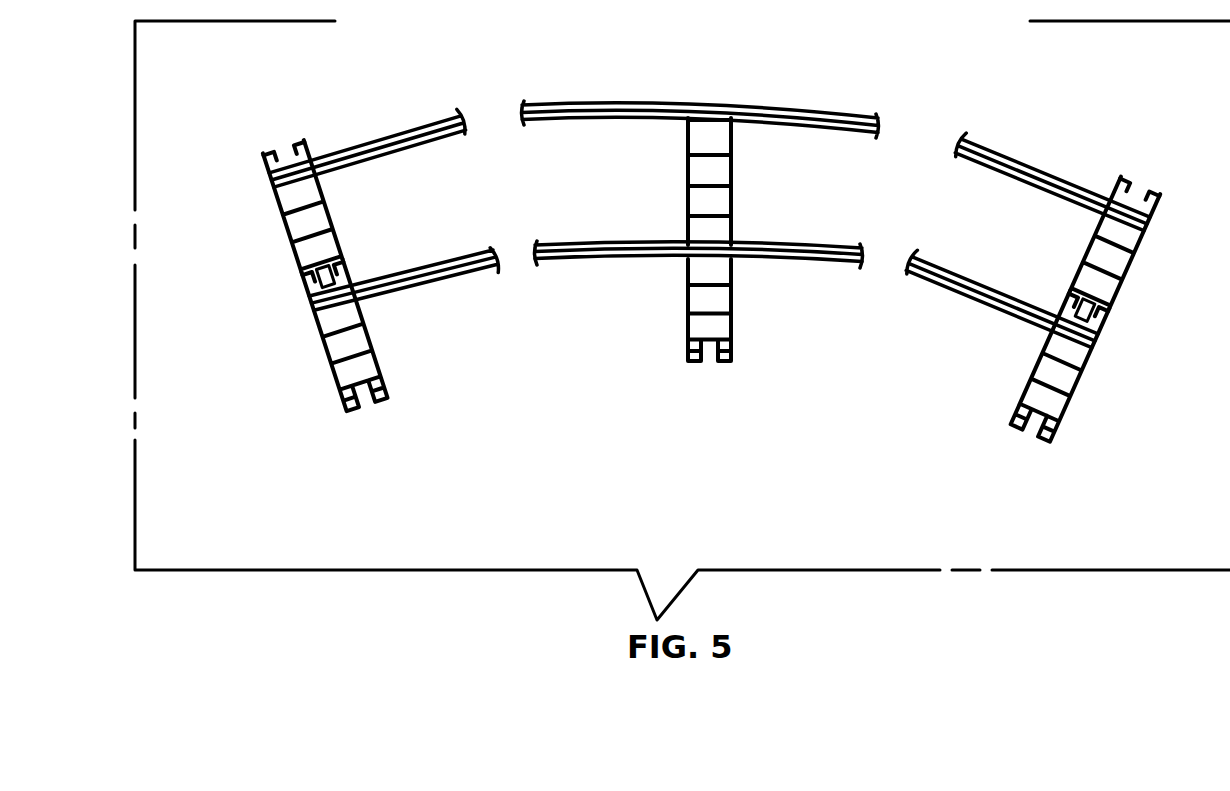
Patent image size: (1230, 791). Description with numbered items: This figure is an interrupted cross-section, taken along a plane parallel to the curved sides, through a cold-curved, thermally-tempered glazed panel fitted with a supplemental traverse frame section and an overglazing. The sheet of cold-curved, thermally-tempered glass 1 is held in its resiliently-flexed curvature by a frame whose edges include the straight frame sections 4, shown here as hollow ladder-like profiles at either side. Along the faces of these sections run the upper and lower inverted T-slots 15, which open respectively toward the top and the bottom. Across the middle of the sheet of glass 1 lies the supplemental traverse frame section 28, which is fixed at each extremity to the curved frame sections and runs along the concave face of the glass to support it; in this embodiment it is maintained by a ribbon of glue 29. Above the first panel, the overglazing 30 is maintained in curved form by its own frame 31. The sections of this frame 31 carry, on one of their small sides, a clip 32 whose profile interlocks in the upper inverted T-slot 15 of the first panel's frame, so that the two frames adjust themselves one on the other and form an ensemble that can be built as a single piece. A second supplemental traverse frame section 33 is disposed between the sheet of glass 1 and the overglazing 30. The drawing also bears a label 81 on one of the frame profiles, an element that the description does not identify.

The sheet of cold-curved, thermally-tempered glass 1 is at (470, 252).
The straight frame section 4 is at (340, 392).
The inverted T-slot 15 is at (287, 150).
The supplemental traverse frame section 28 is at (737, 311).
The ribbon of glue 29 is at (744, 257).
The overglazing 30 is at (384, 138).
The frame 31 is at (1125, 287).
The clip 32 is at (330, 284).
The second supplemental traverse frame section 33 is at (686, 218).
The left upper profile member 81 is at (287, 230).